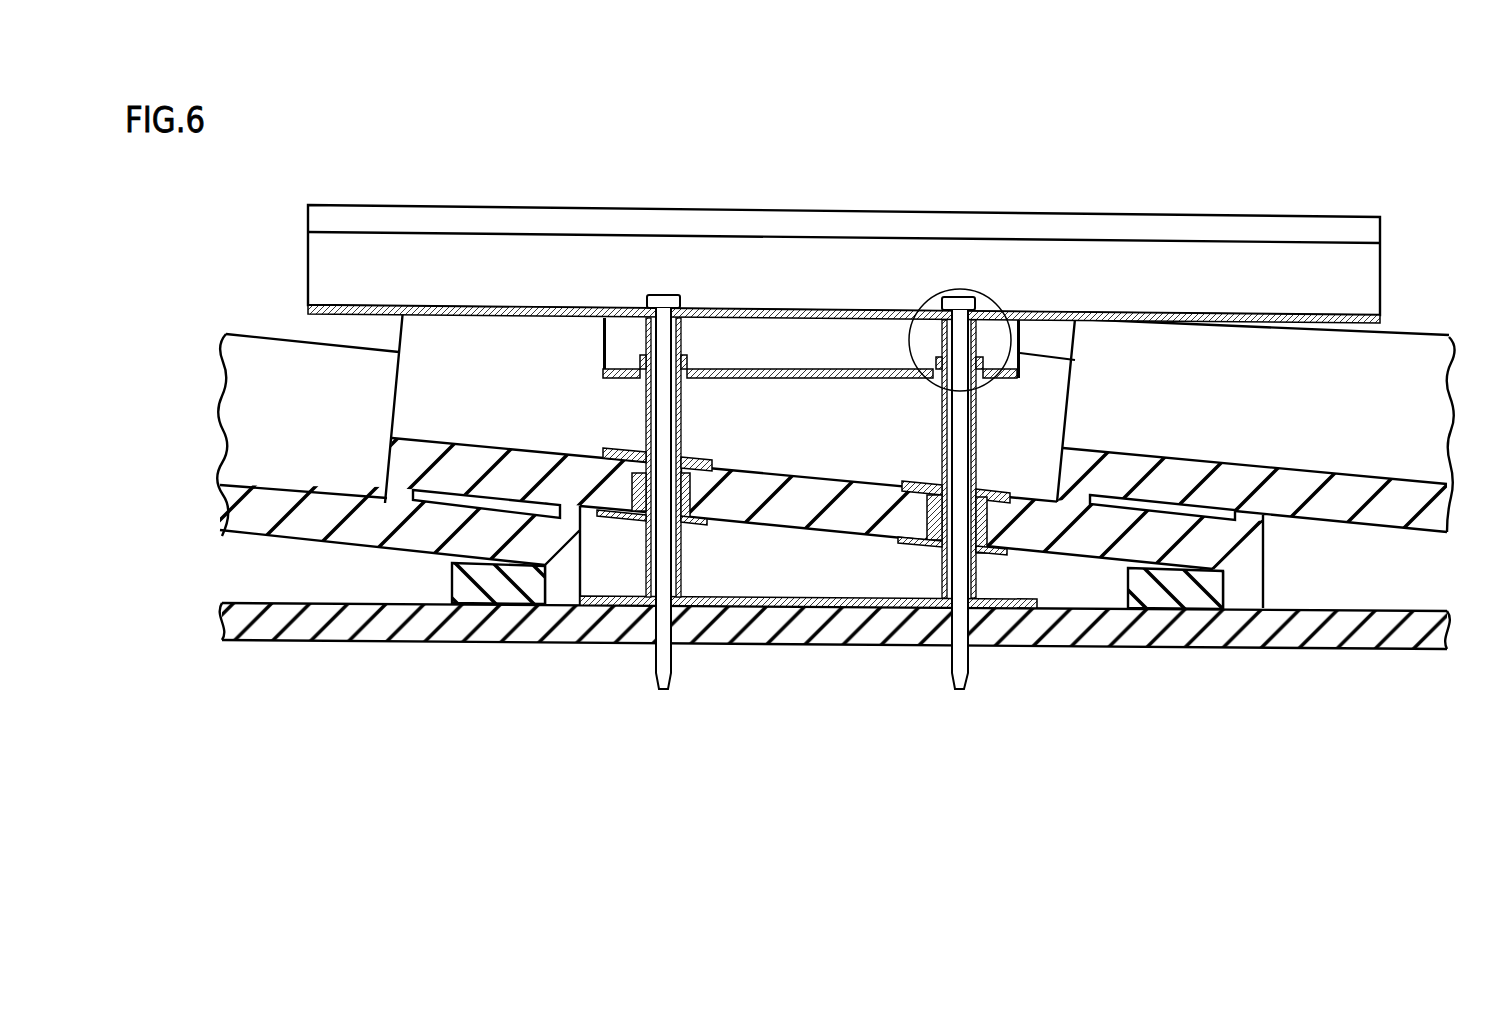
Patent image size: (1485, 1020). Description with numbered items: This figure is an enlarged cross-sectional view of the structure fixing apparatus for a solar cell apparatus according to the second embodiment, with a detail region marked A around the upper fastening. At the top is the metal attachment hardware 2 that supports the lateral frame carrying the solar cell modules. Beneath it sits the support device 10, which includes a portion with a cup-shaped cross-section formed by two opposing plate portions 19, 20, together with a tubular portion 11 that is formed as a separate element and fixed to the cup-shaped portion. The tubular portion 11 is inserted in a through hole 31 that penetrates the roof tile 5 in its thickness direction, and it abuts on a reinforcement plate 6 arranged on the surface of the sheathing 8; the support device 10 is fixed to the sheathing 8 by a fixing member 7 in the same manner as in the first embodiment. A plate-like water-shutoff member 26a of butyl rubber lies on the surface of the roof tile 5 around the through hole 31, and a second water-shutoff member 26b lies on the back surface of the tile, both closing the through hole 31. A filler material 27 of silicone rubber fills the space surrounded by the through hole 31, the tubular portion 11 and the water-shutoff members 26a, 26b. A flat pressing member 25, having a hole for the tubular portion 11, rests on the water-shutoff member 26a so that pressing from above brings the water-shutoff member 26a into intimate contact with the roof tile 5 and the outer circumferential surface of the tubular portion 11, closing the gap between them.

The attachment hardware 2 is at (1188, 232).
The roof tile 5 is at (270, 362).
The reinforcement plate 6 is at (1030, 607).
The fixing member 7 is at (661, 293).
The sheathing 8 is at (418, 625).
The support device 10 is at (997, 342).
The tubular portion 11 is at (677, 573).
The plate portion 19 is at (622, 316).
The plate portion 20 is at (603, 366).
The pressing member 25 is at (600, 449).
The water-shutoff member 26a is at (603, 456).
The water-shutoff member 26b is at (597, 514).
The filler material 27 is at (693, 500).
The through hole 31 is at (634, 505).
The detail region A is at (931, 297).